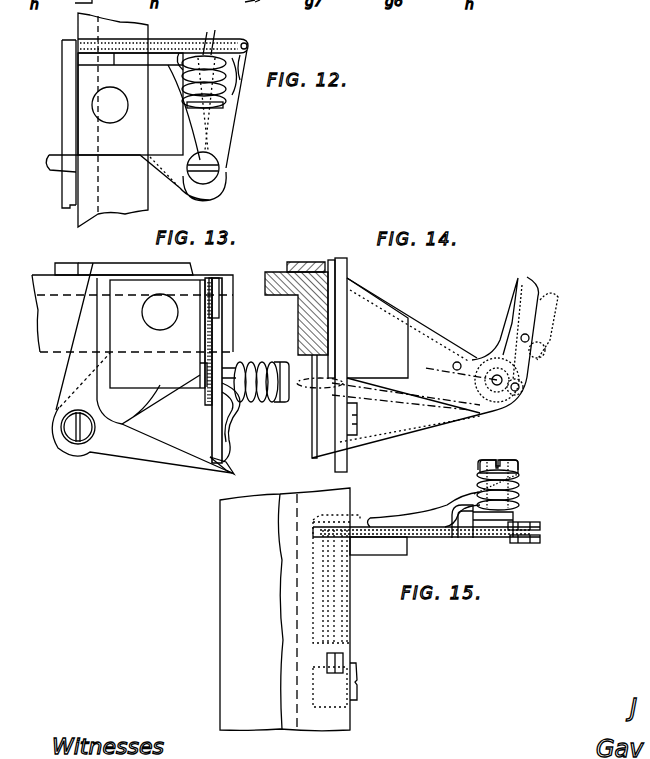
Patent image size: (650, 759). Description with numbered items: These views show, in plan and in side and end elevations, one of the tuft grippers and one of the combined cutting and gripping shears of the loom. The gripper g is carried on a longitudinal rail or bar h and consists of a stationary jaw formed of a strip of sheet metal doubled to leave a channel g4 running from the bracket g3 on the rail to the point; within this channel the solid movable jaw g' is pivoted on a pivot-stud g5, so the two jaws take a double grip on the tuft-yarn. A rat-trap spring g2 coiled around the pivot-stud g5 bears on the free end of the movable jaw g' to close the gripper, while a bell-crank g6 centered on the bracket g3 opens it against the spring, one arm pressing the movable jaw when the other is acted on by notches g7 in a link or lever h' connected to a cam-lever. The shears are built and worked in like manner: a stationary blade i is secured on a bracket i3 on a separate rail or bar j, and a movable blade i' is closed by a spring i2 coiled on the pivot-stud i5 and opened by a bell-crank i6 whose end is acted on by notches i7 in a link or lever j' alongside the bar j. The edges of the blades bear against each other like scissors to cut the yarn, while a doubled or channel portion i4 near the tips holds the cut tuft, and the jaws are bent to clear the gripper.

In FIG. 12, the rail or bar h is at (96, 118).
In FIG. 12, the link or lever h' is at (51, 124).
In FIG. 12, the gripper g is at (165, 30).
In FIG. 12, the movable jaw g' is at (263, 36).
In FIG. 12, the spring g2 is at (224, 105).
In FIG. 12, the bracket g3 is at (118, 98).
In FIG. 12, the channel g4 is at (243, 60).
In FIG. 12, the pivot-stud g5 is at (205, 56).
In FIG. 12, the bell-crank g6 is at (228, 138).
In FIG. 12, the notches g7 is at (76, 152).
In FIG. 13, the stationary blade i is at (202, 370).
In FIG. 14, the stationary blade i is at (416, 365).
In FIG. 15, the stationary blade i is at (426, 546).
In FIG. 13, the movable blade i' is at (215, 452).
In FIG. 14, the movable blade i' is at (492, 364).
In FIG. 15, the movable blade i' is at (424, 509).
In FIG. 13, the spring i2 is at (256, 362).
In FIG. 14, the spring i2 is at (520, 384).
In FIG. 15, the spring i2 is at (520, 480).
In FIG. 13, the bracket i3 is at (157, 334).
In FIG. 14, the bracket i3 is at (360, 368).
In FIG. 15, the bracket i3 is at (380, 556).
In FIG. 13, the doubled or channel portion i4 is at (215, 280).
In FIG. 14, the doubled or channel portion i4 is at (526, 280).
In FIG. 15, the doubled or channel portion i4 is at (541, 537).
In FIG. 13, the pivot-stud i5 is at (240, 412).
In FIG. 14, the pivot-stud i5 is at (484, 378).
In FIG. 15, the pivot-stud i5 is at (505, 518).
In FIG. 13, the bell-crank i6 is at (110, 355).
In FIG. 14, the bell-crank i6 is at (338, 306).
In FIG. 15, the bell-crank i6 is at (345, 662).
In FIG. 13, the notches i7 is at (82, 264).
In FIG. 14, the notches i7 is at (333, 260).
In FIG. 15, the notches i7 is at (327, 663).
In FIG. 13, the rail or bar j is at (132, 313).
In FIG. 14, the rail or bar j is at (296, 313).
In FIG. 15, the rail or bar j is at (285, 609).
In FIG. 13, the link or lever j' is at (135, 256).
In FIG. 14, the link or lever j' is at (293, 253).
In FIG. 15, the link or lever j' is at (325, 630).